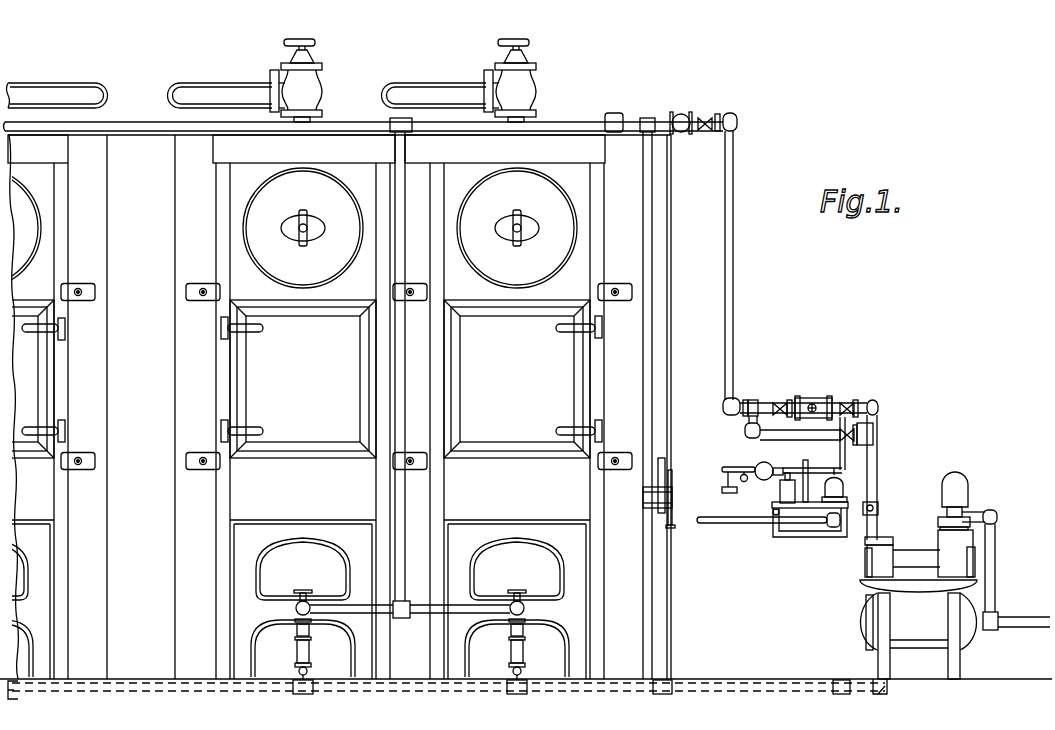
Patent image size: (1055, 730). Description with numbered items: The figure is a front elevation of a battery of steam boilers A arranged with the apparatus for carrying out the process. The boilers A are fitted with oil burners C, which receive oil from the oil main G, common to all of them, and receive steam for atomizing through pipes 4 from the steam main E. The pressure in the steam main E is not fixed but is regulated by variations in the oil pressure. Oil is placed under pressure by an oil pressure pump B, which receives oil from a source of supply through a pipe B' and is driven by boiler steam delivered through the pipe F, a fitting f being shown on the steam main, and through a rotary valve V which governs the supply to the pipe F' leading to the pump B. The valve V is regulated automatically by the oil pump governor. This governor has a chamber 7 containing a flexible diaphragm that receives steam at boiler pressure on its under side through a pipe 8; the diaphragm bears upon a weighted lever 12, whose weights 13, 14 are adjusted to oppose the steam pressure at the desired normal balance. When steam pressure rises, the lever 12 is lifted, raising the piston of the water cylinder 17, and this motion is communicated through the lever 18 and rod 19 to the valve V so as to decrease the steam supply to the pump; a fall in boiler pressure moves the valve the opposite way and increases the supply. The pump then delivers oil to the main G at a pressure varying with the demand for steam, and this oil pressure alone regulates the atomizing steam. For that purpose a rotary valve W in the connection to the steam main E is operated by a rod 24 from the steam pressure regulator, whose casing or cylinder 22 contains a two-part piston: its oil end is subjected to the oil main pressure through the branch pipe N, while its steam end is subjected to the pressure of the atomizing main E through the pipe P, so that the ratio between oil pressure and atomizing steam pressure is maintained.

The steam boilers A is at (175, 396).
The steam main E is at (364, 117).
The pipe union f is at (622, 101).
The rotary valve W is at (691, 114).
The steam pipe F is at (800, 279).
The steam pipe to pumps F' is at (878, 480).
The rotary valve V is at (813, 403).
The pipe P is at (655, 331).
The rod 24 is at (672, 405).
The branch pipe N is at (660, 583).
The casing or cylinder 22 is at (677, 504).
The steam pipes 4 is at (410, 375).
The oil burners C is at (296, 606).
The rod 19 is at (823, 445).
The weight 13 is at (752, 466).
The weight 14 is at (722, 489).
The weighted lever 12 is at (812, 478).
The water cylinder 17 is at (780, 490).
The chamber 7 is at (838, 484).
The pipe 8 is at (743, 523).
The lever 18 is at (815, 536).
The oil pressure pump B is at (918, 575).
The oil supply pipe B' is at (1006, 570).
The oil main G is at (438, 691).